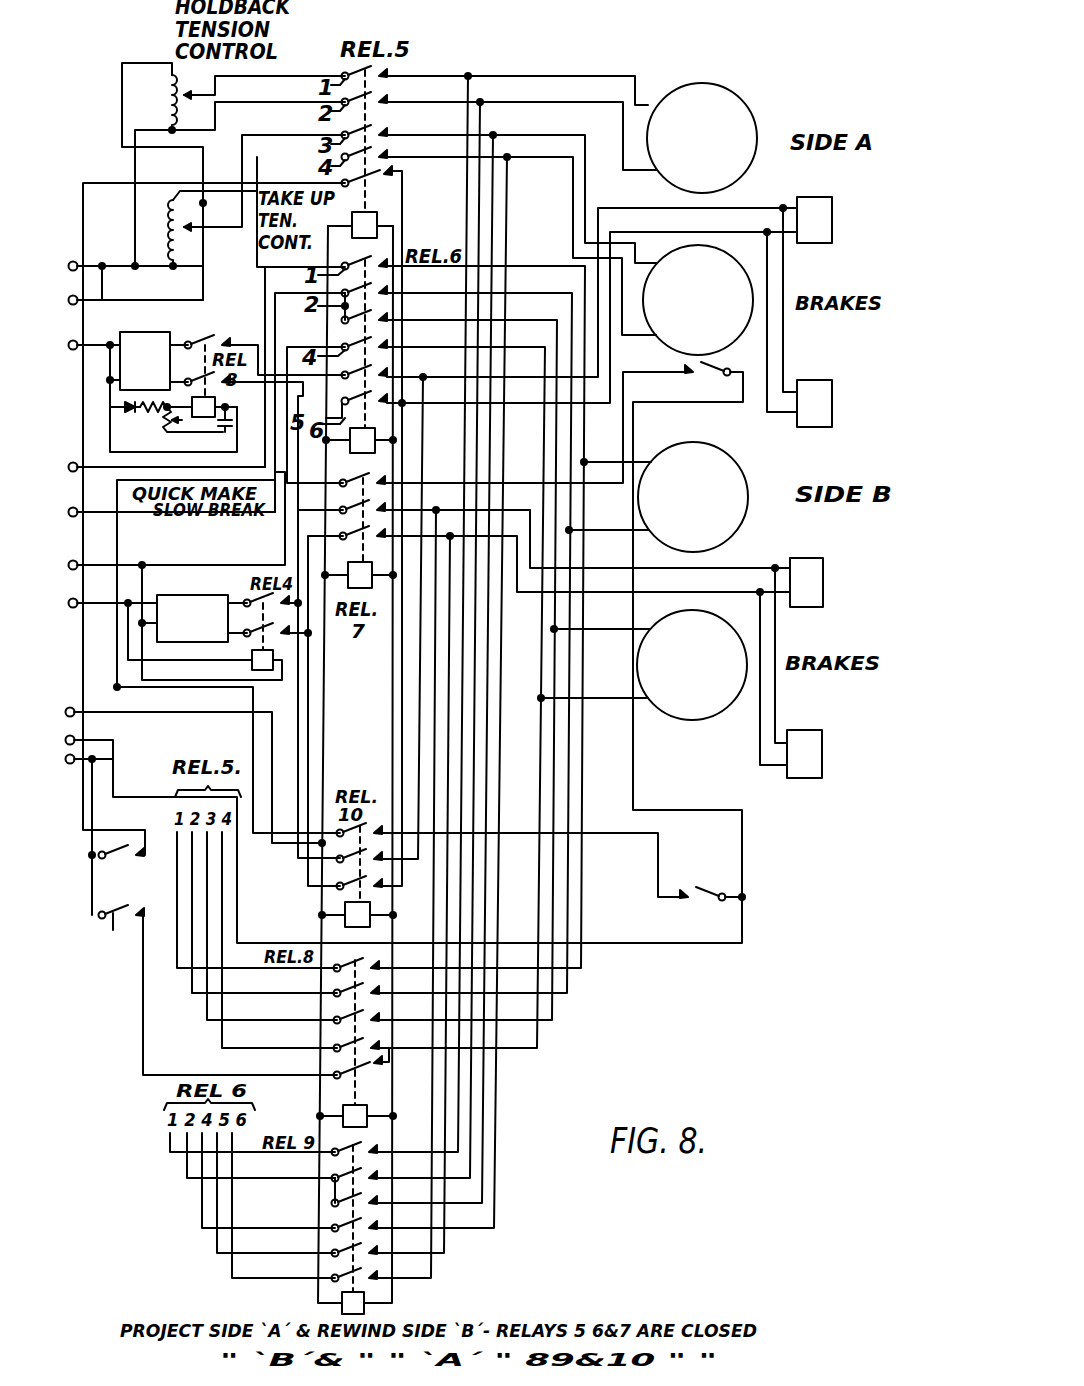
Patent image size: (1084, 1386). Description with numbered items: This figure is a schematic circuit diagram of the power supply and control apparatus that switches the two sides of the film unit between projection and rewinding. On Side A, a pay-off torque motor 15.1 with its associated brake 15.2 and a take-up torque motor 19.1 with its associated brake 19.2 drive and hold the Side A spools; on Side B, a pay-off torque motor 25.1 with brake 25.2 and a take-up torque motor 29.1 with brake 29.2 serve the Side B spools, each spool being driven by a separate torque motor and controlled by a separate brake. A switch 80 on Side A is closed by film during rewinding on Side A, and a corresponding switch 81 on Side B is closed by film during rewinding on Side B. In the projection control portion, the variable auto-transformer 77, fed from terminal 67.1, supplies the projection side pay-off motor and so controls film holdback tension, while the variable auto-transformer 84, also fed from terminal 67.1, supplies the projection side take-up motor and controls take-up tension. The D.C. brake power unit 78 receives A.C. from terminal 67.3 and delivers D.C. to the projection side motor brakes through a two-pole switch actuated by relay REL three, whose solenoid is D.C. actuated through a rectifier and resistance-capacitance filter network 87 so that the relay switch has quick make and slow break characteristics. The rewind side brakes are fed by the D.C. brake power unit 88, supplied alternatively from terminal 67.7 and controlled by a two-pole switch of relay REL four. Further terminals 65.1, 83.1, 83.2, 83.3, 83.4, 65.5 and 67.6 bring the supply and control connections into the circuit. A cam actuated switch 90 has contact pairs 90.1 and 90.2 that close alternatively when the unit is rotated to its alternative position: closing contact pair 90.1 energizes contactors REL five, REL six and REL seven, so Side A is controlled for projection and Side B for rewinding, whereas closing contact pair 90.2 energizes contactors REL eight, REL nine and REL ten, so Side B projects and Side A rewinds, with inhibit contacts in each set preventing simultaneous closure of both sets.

The variable auto-transformer 77 is at (168, 84).
The variable auto-transformer 84 is at (171, 214).
The terminal 65.1 is at (77, 262).
The terminal 67.1 is at (77, 297).
The terminal 67.3 is at (77, 342).
The D.C. brake power unit 78 is at (165, 333).
The rectifier and resistance-capacitance filter network 87 is at (170, 424).
The terminal 83.1 is at (167, 479).
The terminal 83.2 is at (78, 516).
The terminal 83.3 is at (78, 562).
The terminal 83.4 is at (78, 600).
The D.C. brake power unit 88 is at (205, 598).
The terminal 65.5 is at (75, 708).
The terminal 67.6 is at (75, 737).
The terminal 67.7 is at (75, 756).
The cam actuated switch 90 is at (212, 917).
The contact pair 90.1 is at (218, 990).
The contact pair 90.2 is at (110, 850).
The pay-off torque motor 15.1 is at (746, 112).
The brake 15.2 is at (815, 187).
The take-up torque motor 19.1 is at (740, 332).
The brake 19.2 is at (815, 380).
The switch 80 is at (712, 366).
The pay-off torque motor 25.1 is at (745, 482).
The brake 25.2 is at (809, 558).
The take-up torque motor 29.1 is at (720, 712).
The brake 29.2 is at (806, 730).
The switch 81 is at (703, 891).